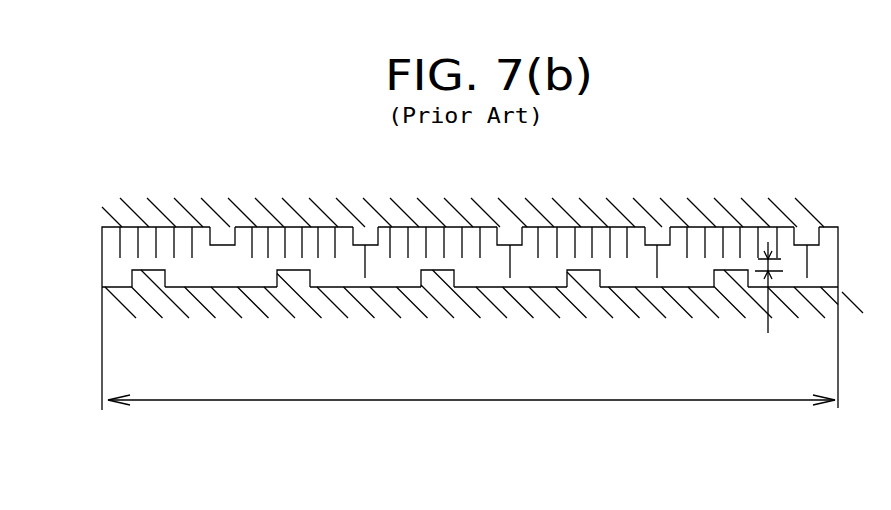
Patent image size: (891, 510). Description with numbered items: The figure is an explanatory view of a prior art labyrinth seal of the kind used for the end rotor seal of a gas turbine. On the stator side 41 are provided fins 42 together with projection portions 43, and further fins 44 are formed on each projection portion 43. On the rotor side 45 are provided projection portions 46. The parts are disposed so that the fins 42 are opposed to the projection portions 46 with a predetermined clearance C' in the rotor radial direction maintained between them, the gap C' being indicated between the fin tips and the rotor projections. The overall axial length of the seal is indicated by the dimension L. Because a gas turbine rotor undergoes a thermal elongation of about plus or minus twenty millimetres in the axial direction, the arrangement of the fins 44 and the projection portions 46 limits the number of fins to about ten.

The stator side 41 is at (348, 228).
The fins 42 is at (613, 240).
The projection portions 43 is at (664, 233).
The fins on the projection portion 44 is at (665, 265).
The rotor side 45 is at (347, 288).
The projection portions 46 is at (578, 275).
The clearance C' is at (788, 302).
The overall length L is at (471, 387).